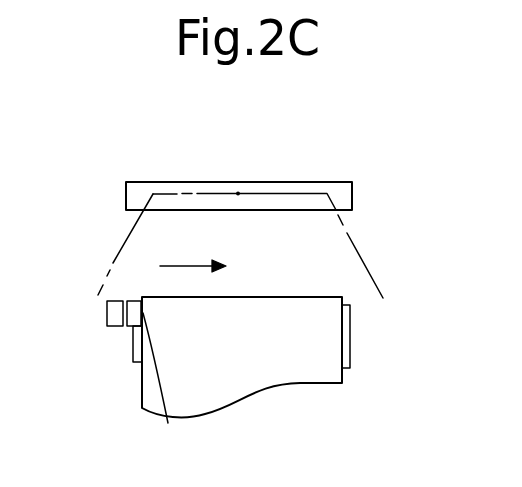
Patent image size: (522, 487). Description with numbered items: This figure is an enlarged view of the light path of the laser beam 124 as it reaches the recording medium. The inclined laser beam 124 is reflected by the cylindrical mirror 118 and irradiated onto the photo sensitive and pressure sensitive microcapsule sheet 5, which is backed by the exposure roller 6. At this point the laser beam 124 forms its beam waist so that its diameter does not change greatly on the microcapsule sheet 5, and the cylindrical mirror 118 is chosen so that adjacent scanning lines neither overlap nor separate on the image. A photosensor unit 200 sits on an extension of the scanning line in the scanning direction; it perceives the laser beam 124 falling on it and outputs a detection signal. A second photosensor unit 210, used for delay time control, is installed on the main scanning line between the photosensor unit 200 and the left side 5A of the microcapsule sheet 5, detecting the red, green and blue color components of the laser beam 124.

The cylindrical mirror 118 is at (353, 186).
The laser beam 124 is at (365, 258).
The photo sensitive and pressure sensitive microcapsule sheet 5 is at (309, 384).
The left side of the microcapsule sheet 5A is at (167, 386).
The exposure roller 6 is at (132, 358).
The photosensor unit 200 is at (107, 317).
The photosensor unit for delay time control 210 is at (129, 330).